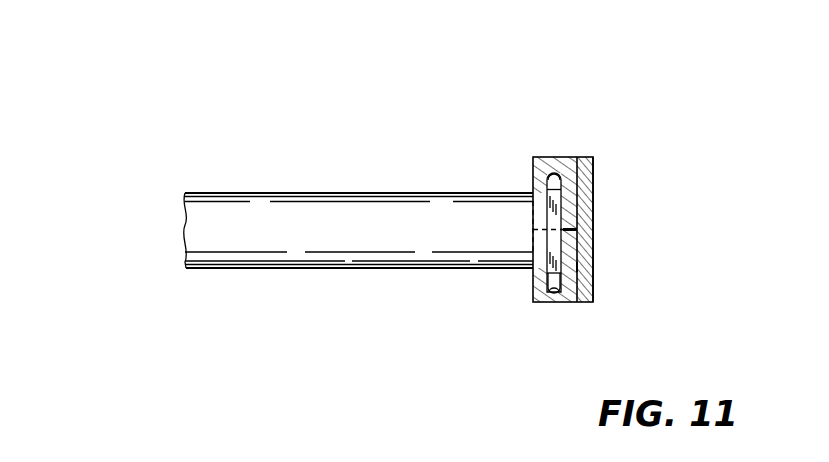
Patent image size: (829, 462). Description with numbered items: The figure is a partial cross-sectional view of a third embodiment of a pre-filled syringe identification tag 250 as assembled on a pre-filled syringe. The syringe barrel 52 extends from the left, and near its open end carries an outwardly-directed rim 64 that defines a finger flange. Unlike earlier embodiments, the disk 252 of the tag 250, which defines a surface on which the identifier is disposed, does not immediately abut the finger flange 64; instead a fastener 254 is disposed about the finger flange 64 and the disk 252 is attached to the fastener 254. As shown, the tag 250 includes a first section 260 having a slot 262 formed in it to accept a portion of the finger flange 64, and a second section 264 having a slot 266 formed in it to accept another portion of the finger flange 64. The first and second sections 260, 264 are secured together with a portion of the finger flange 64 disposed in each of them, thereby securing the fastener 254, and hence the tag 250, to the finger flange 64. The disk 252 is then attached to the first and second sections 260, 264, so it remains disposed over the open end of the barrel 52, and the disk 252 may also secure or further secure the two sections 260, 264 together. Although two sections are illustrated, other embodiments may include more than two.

The barrel 52 is at (302, 255).
The rim 64 is at (553, 178).
The tag 250 is at (605, 146).
The disk 252 is at (594, 246).
The fastener 254 is at (526, 299).
The first section 260 is at (565, 158).
The slot 262 is at (592, 186).
The second section 264 is at (565, 303).
The slot 266 is at (578, 268).